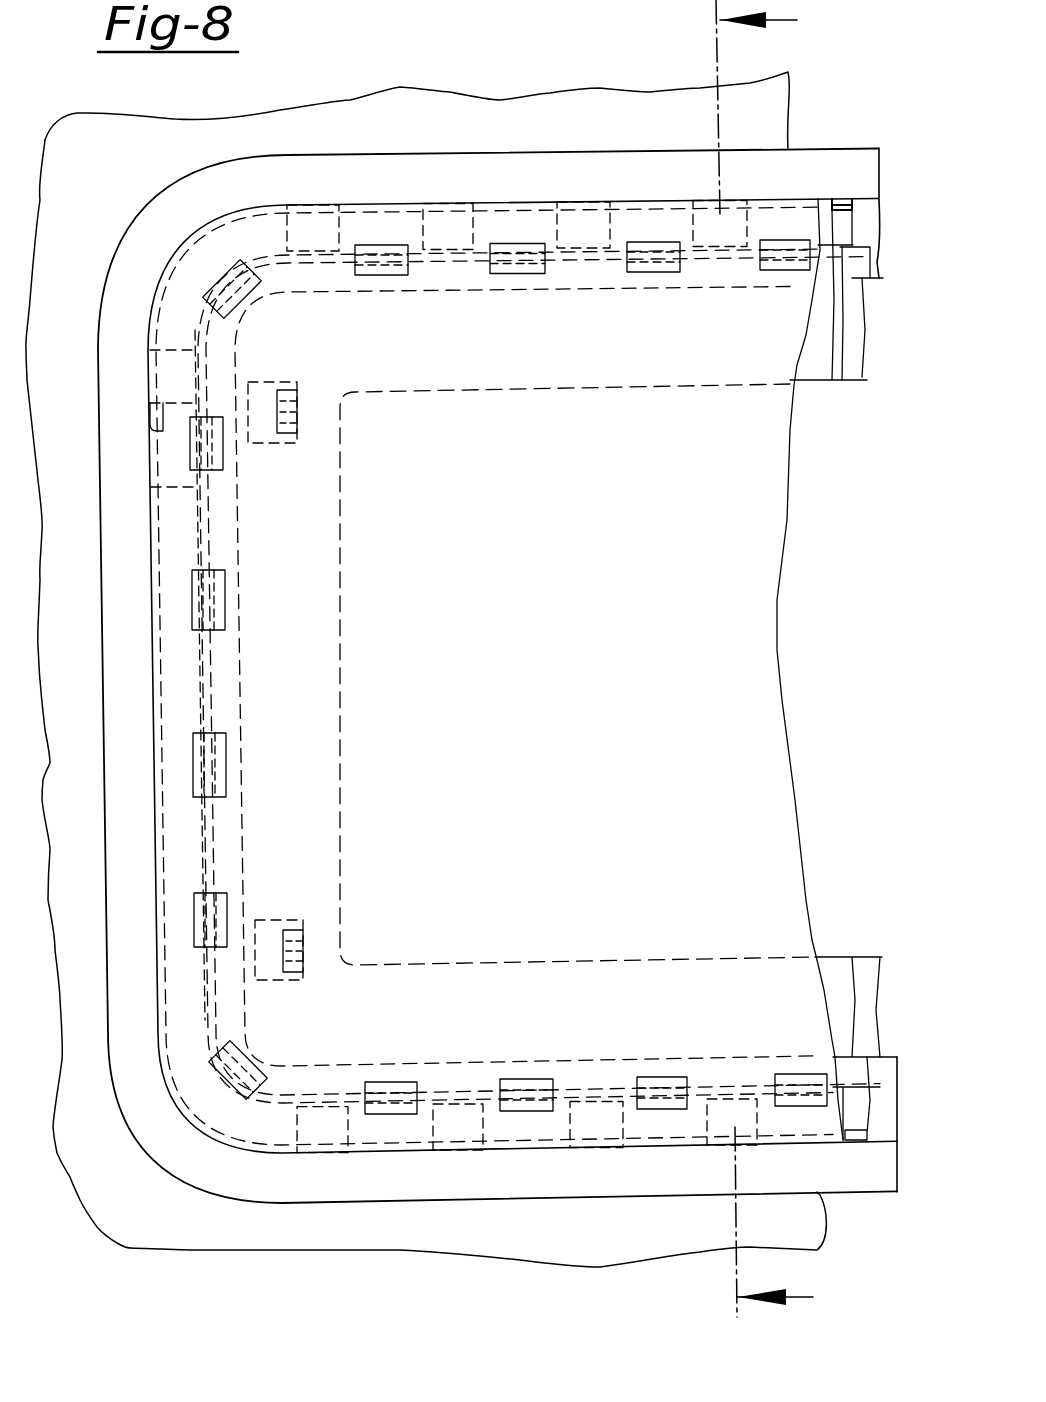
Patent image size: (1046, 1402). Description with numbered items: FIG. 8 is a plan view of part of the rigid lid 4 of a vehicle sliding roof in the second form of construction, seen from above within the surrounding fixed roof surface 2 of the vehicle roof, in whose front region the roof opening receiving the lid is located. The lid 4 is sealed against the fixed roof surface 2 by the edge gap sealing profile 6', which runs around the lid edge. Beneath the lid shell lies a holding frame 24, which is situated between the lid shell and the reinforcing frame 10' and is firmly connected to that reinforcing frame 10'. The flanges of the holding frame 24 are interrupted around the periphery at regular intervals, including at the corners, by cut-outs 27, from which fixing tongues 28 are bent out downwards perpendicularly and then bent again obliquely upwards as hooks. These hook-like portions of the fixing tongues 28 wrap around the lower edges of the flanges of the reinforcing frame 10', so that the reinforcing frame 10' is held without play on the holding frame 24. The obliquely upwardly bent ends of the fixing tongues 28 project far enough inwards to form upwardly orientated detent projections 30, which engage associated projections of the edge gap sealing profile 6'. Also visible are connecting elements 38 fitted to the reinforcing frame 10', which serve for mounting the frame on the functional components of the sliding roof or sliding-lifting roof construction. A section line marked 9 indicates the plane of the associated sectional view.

The fixed roof surface 2 is at (426, 669).
The rigid lid 4 is at (782, 650).
The edge gap sealing profile 6' is at (497, 657).
The section line 9- 9 is at (746, 659).
The reinforcing frame 10' is at (843, 669).
The holding frame 24 is at (812, 367).
The cut-outs 27 is at (422, 237).
The fixing tongues 28 is at (397, 230).
The detent projections 30 is at (517, 274).
The connecting elements 38 is at (297, 403).